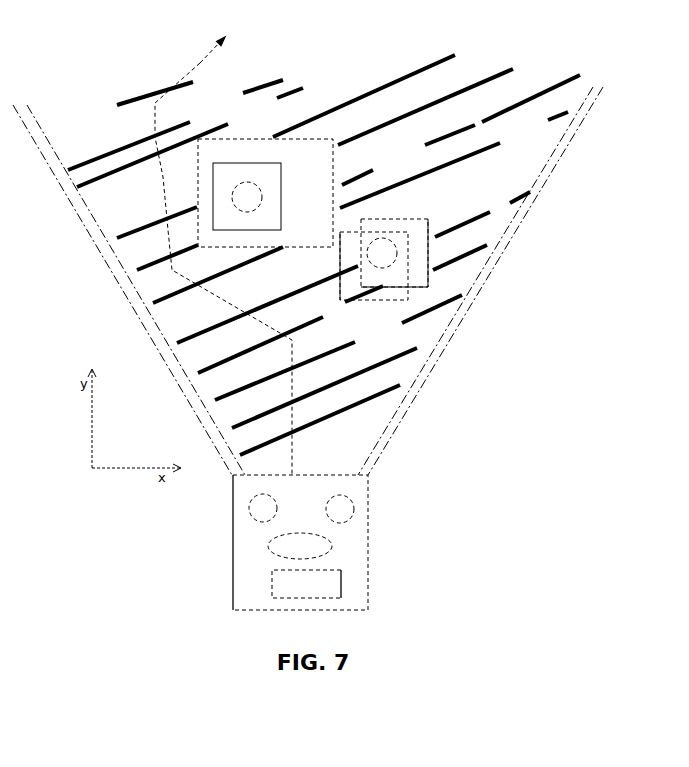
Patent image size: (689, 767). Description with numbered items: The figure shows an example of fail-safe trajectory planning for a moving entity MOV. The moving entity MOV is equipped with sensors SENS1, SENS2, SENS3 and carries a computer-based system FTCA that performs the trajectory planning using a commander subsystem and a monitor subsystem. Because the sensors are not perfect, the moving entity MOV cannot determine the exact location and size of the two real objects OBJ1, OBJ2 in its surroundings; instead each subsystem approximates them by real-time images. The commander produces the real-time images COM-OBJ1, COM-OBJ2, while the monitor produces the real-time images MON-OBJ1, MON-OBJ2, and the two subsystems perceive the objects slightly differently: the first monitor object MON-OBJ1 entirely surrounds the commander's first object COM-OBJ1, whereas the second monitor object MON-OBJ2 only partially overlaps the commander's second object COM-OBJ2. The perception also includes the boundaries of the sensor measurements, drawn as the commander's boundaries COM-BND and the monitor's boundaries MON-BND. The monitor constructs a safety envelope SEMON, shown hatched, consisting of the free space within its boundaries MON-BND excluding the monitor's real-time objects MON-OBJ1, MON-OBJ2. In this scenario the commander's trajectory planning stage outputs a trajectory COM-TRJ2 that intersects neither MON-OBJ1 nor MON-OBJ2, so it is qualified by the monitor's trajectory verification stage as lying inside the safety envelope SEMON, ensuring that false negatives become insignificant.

The trajectory COM-TRJ2 is at (202, 63).
The monitor's boundaries MON-BND is at (46, 131).
The boundaries COM-BND is at (128, 300).
The safety envelope SEMON is at (380, 397).
The real-time image MON-OBJ1 is at (333, 162).
The real-time image COM-OBJ1 is at (240, 163).
The object OBJ1 is at (262, 196).
The real-time image MON-OBJ2 is at (450, 212).
The real-time image COM-OBJ2 is at (407, 300).
The object OBJ2 is at (380, 264).
The moving entity MOV is at (368, 537).
The sensor SENS1 is at (248, 512).
The sensor SENS2 is at (355, 508).
The sensor SENS3 is at (268, 552).
The computer-based system FTCA is at (341, 580).